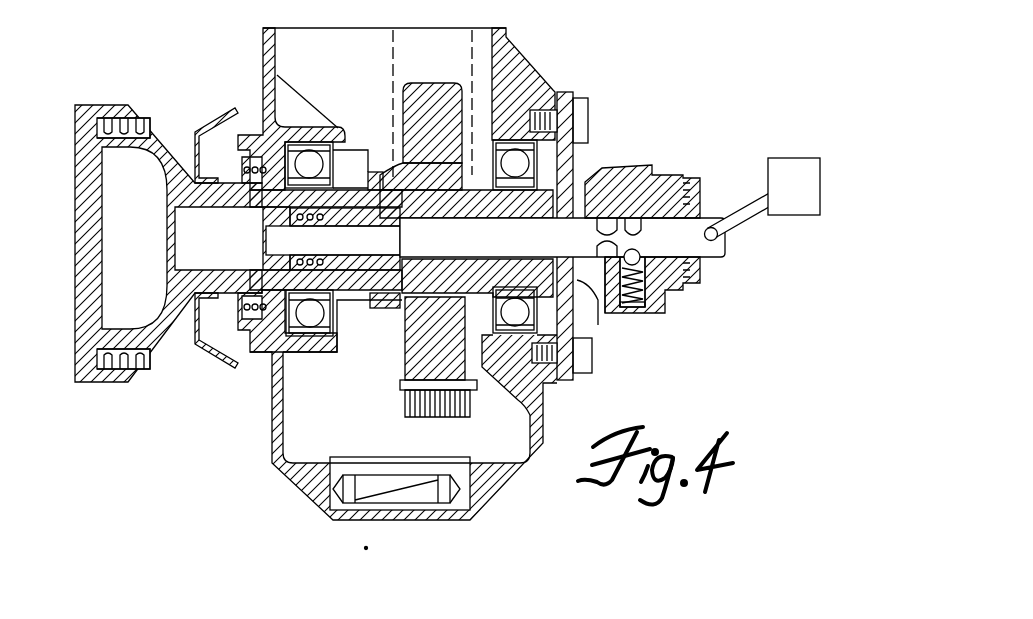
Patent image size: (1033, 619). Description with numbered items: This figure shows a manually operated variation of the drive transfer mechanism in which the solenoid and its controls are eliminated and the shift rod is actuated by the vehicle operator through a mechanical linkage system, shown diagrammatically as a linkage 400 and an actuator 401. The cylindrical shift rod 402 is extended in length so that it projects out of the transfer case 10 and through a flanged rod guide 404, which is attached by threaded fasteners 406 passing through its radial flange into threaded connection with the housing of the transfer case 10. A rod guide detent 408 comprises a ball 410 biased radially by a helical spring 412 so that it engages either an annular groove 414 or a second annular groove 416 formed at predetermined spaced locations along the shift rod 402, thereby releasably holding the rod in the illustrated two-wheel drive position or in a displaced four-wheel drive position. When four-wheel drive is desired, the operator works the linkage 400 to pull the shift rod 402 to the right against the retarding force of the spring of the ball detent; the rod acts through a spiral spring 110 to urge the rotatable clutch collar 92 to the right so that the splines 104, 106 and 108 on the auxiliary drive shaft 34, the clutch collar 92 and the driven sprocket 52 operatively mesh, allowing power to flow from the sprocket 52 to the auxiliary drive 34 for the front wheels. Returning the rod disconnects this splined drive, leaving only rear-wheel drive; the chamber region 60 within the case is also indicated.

The transfer case 10 is at (517, 61).
The auxiliary drive shaft 34 is at (178, 140).
The driven sprocket 52 is at (430, 95).
The chamber 60 is at (400, 50).
The clutch collar 92 is at (345, 210).
The splines 104 is at (397, 196).
The splines 106 is at (384, 180).
The splines 108 is at (408, 295).
The spiral spring 110 is at (282, 263).
The linkage 400 is at (758, 213).
The actuator 401 is at (795, 165).
The shift rod 402 is at (560, 232).
The flanged rod guide 404 is at (652, 168).
The threaded fasteners 406 is at (586, 106).
The rod guide detent 408 is at (661, 315).
The ball 410 is at (641, 263).
The helical spring 412 is at (637, 302).
The annular groove 414 is at (635, 224).
The annular groove 416 is at (605, 247).